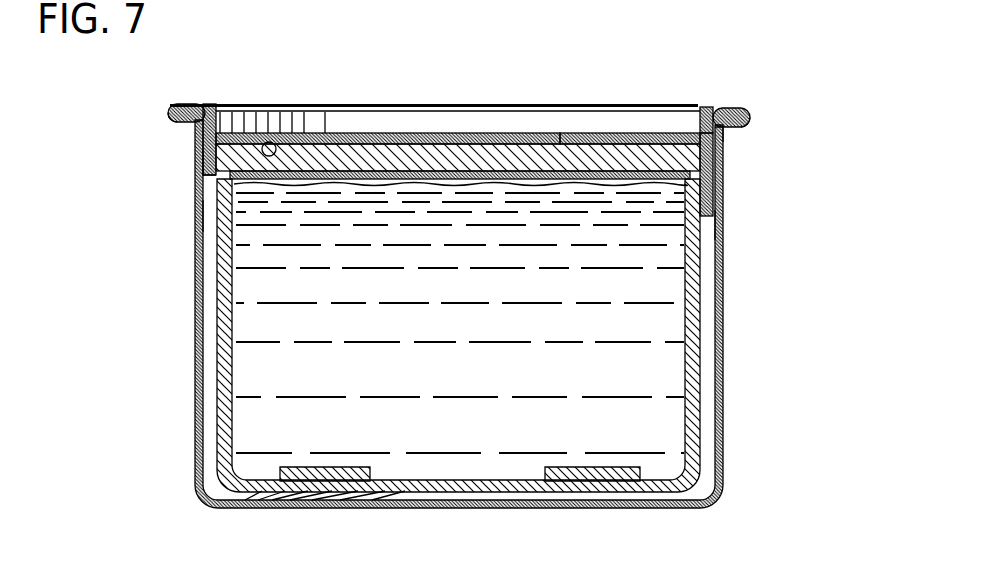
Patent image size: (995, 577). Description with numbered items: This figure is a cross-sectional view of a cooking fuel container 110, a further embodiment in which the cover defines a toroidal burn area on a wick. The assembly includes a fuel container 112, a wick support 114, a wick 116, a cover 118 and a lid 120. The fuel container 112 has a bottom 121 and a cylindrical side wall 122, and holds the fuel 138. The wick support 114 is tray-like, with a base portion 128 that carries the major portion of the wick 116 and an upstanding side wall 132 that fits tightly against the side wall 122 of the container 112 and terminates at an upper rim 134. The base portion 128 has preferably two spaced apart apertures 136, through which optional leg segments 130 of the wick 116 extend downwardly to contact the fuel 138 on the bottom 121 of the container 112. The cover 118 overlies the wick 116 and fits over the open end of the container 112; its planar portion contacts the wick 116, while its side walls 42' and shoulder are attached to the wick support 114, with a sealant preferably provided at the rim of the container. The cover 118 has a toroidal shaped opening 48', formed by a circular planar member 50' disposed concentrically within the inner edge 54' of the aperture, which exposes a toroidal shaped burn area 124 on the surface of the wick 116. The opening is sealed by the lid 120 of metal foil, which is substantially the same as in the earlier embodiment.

The cooking fuel container 110 is at (136, 283).
The fuel container 112 is at (735, 387).
The wick support 114 is at (200, 157).
The wick 116 is at (723, 168).
The cover 118 is at (737, 97).
The lid 120 is at (618, 133).
The bottom 121 is at (472, 480).
The side wall 122 is at (723, 446).
The toroidal shaped burn area 124 is at (592, 133).
The base portion 128 is at (430, 196).
The leg segments 130 is at (220, 330).
The upstanding side wall 132 is at (722, 150).
The upper rim 134 is at (727, 133).
The apertures 136 is at (197, 213).
The fuel 138 is at (262, 372).
The side walls 42' is at (458, 75).
The toroidal shaped opening 48' is at (341, 71).
The circular planar member 50' is at (388, 90).
The inner edge 54' is at (337, 96).